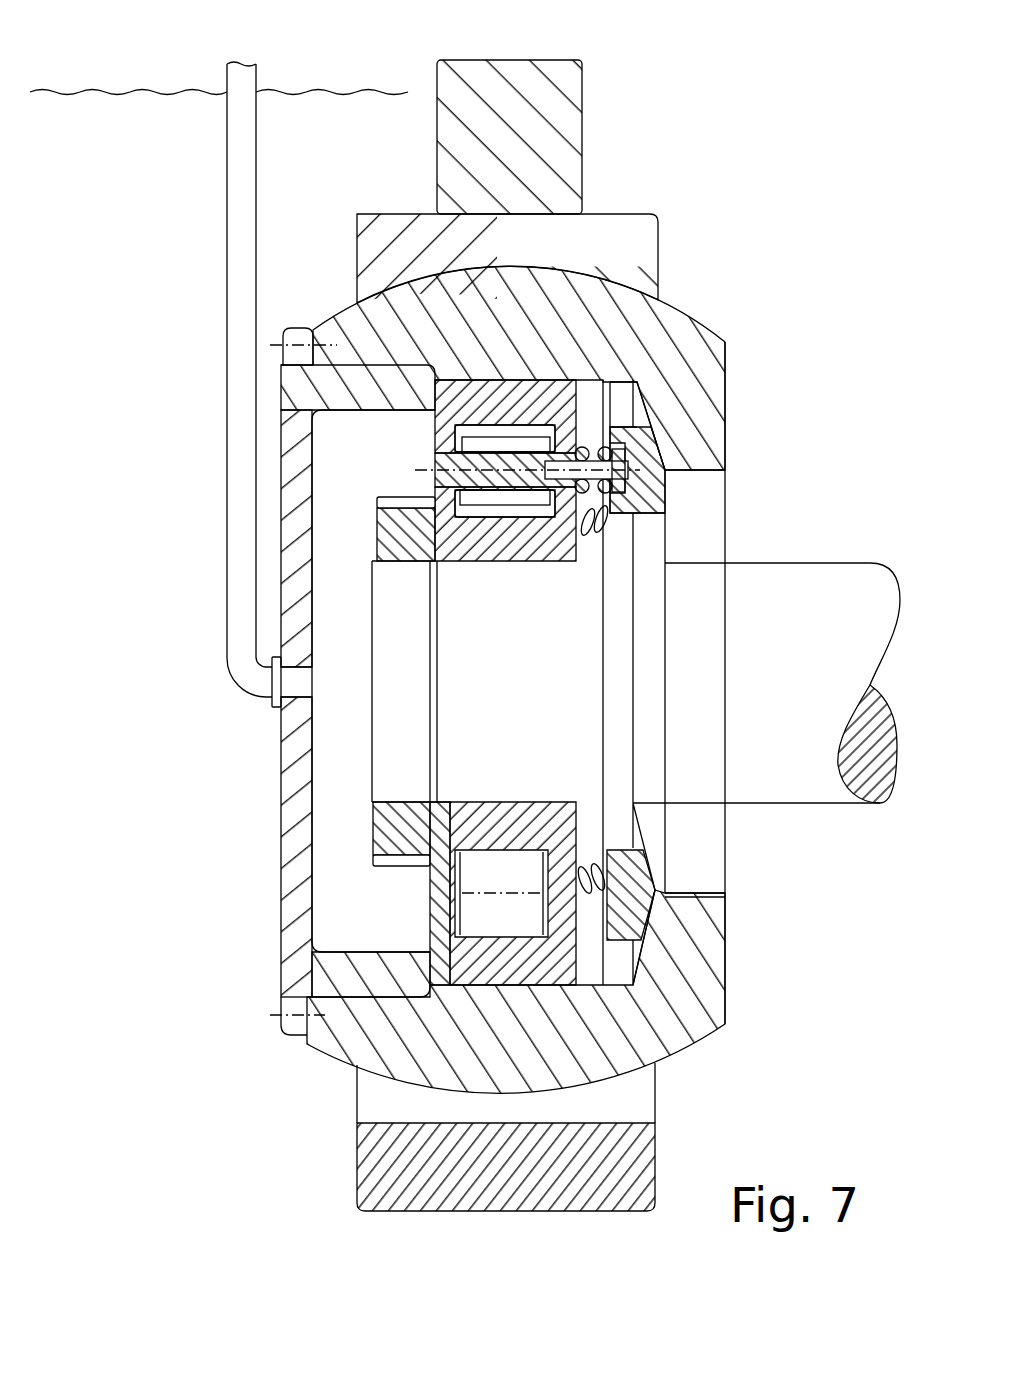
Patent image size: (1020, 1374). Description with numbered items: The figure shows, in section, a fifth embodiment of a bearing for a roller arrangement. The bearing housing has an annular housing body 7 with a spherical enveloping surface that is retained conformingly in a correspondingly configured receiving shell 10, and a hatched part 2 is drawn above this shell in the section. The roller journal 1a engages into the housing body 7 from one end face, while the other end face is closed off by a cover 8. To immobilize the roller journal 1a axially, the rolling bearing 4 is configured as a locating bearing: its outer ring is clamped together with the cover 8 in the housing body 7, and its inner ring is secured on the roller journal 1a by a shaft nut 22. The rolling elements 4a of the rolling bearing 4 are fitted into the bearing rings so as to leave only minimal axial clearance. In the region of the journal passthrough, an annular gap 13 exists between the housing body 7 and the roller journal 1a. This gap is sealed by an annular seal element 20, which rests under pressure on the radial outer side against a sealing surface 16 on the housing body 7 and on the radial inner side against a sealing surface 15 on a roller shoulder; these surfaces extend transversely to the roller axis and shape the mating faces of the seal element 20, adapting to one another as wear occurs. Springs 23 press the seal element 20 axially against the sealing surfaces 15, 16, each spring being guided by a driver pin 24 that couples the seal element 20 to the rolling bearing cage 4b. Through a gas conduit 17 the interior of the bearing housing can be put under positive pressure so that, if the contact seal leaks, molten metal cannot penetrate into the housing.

The roller journal 1a is at (636, 682).
The support shaft 2 is at (458, 97).
The rolling bearing 4 is at (450, 415).
The rolling elements 4a is at (518, 918).
The rolling bearing cage 4b is at (605, 492).
The housing body 7 is at (370, 330).
The cover 8 is at (298, 578).
The receiving shell 10 is at (388, 225).
The annular gap 13 is at (713, 897).
The sealing surface 15 is at (662, 877).
The sealing surface 16 is at (667, 917).
The gas conduit 17 is at (248, 243).
The seal element 20 is at (637, 428).
The shaft nut 22 is at (390, 512).
The springs 23 is at (626, 450).
The driver pins 24 is at (624, 472).